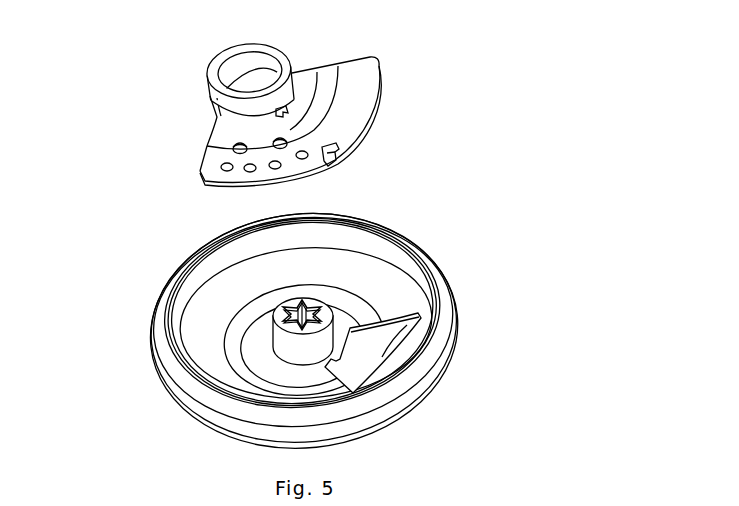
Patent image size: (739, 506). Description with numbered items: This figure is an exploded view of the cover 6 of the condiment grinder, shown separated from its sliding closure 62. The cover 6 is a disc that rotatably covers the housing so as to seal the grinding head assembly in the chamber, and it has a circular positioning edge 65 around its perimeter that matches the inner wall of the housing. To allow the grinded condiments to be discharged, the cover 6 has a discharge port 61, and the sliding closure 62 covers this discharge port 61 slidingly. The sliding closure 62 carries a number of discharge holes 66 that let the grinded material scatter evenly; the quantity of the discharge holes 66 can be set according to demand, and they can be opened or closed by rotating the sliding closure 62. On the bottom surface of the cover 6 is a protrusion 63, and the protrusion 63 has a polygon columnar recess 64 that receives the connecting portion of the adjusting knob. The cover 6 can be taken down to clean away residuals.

The cover 6 is at (306, 311).
The discharge port 61 is at (421, 317).
The sliding closure 62 is at (317, 64).
The protrusion 63 is at (287, 345).
The polygon columnar recess 64 is at (299, 310).
The circular positioning edge 65 is at (183, 297).
The discharge holes 66 is at (226, 163).